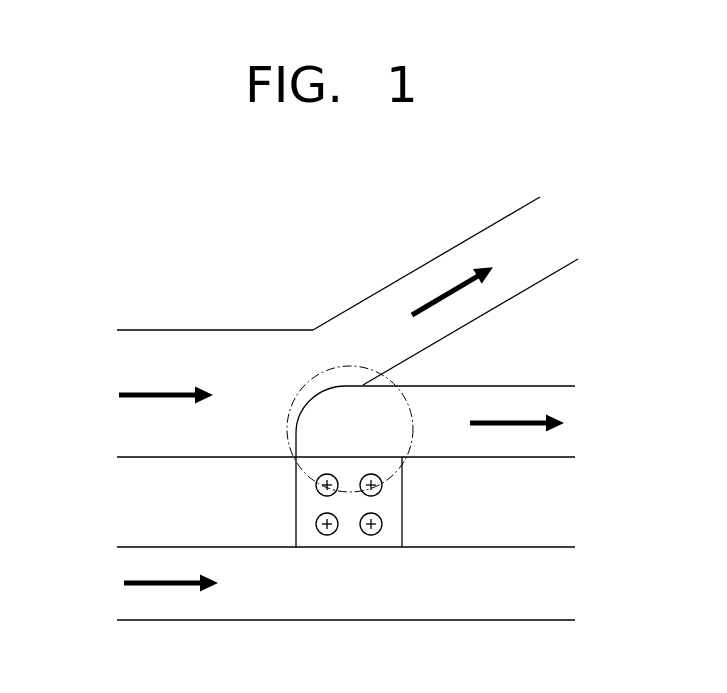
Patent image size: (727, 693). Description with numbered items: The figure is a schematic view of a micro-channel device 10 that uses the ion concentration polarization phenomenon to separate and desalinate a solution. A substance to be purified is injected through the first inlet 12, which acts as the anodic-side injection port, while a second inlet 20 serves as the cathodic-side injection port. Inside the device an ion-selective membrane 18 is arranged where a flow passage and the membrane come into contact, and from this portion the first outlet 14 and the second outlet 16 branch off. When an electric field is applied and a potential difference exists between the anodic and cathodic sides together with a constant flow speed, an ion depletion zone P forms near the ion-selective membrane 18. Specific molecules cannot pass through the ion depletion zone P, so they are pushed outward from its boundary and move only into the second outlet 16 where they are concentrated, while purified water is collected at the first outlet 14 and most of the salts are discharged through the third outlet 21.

The micro-channel device 10 is at (70, 222).
The first inlet 12 is at (137, 358).
The first outlet 14 is at (562, 400).
The second outlet 16 is at (535, 268).
The ion-selective membrane 18 is at (387, 505).
The second inlet 20 is at (165, 612).
The third outlet 21 is at (523, 602).
The ion depletion zone P is at (290, 448).